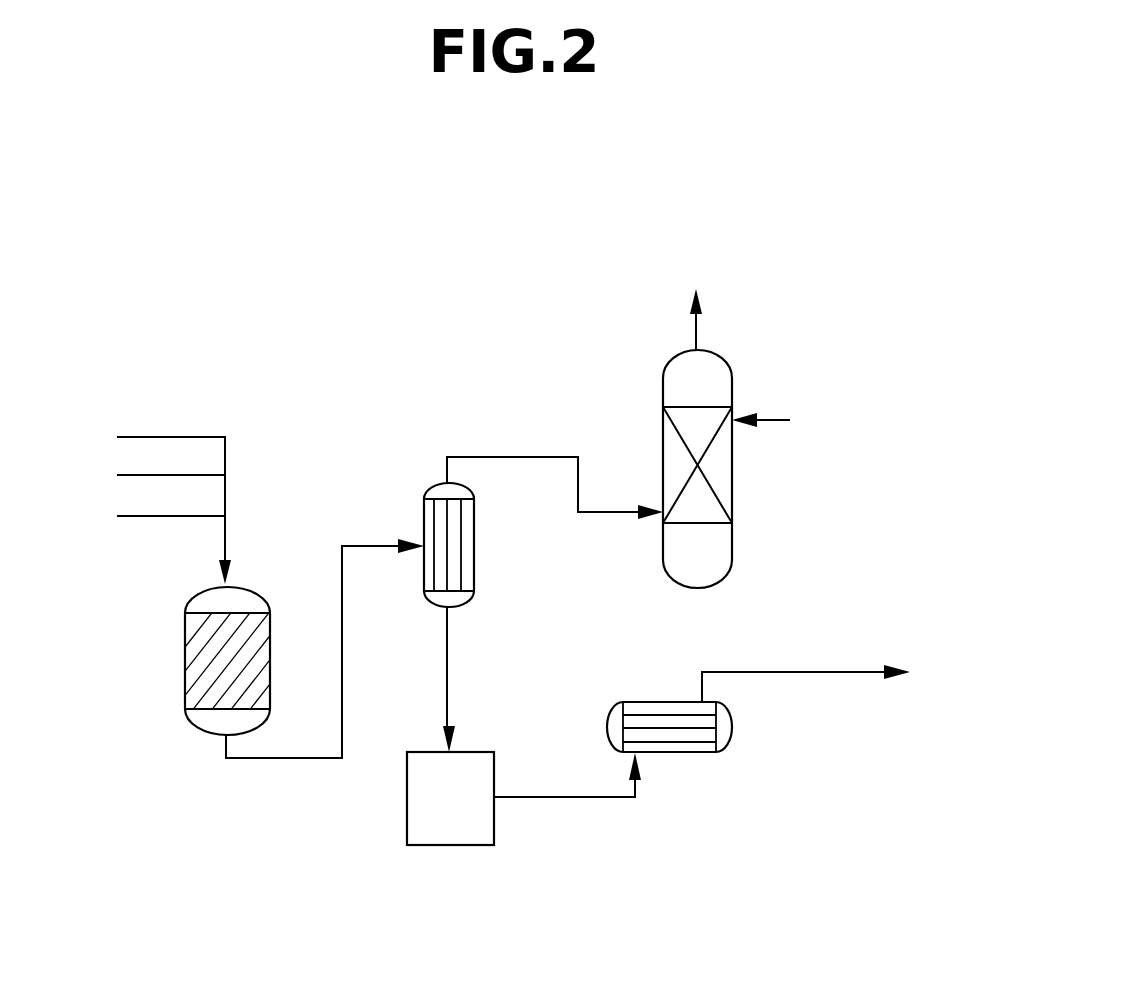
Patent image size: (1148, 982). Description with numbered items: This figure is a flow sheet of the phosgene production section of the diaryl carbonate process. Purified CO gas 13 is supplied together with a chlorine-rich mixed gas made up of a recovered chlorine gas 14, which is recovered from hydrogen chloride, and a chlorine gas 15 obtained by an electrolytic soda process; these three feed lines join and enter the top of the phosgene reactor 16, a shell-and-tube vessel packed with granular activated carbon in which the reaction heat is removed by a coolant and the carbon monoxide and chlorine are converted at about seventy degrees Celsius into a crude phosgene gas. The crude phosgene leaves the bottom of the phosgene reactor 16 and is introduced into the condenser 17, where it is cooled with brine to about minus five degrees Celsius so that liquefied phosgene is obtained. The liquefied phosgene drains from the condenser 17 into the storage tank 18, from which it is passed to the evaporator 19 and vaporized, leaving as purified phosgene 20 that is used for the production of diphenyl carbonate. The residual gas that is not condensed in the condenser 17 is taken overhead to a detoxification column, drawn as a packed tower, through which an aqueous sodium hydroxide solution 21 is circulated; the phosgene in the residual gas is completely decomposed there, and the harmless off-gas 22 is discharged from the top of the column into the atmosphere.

The purified CO gas 13 is at (153, 501).
The recovered chlorine gas 14 is at (150, 474).
The chlorine gas 15 is at (150, 515).
The phosgene reactor 16 is at (268, 648).
The condenser 17 is at (543, 604).
The storage tank 18 is at (524, 820).
The evaporator 19 is at (671, 747).
The purified phosgene 20 is at (827, 678).
The aqueous sodium hydroxide solution 21 is at (746, 469).
The harmless off-gas 22 is at (698, 300).